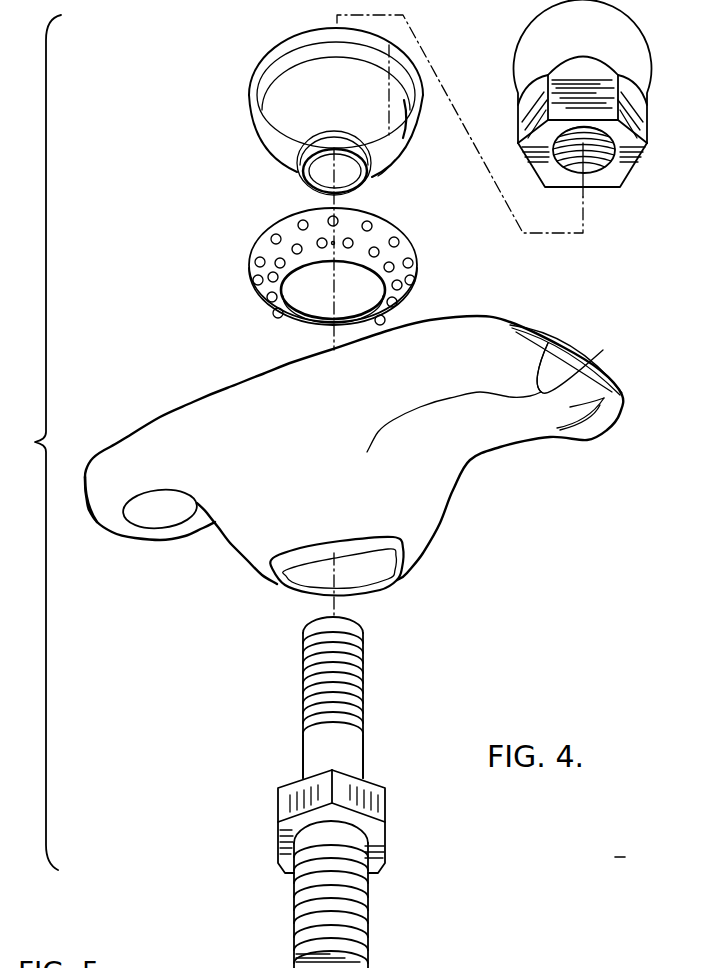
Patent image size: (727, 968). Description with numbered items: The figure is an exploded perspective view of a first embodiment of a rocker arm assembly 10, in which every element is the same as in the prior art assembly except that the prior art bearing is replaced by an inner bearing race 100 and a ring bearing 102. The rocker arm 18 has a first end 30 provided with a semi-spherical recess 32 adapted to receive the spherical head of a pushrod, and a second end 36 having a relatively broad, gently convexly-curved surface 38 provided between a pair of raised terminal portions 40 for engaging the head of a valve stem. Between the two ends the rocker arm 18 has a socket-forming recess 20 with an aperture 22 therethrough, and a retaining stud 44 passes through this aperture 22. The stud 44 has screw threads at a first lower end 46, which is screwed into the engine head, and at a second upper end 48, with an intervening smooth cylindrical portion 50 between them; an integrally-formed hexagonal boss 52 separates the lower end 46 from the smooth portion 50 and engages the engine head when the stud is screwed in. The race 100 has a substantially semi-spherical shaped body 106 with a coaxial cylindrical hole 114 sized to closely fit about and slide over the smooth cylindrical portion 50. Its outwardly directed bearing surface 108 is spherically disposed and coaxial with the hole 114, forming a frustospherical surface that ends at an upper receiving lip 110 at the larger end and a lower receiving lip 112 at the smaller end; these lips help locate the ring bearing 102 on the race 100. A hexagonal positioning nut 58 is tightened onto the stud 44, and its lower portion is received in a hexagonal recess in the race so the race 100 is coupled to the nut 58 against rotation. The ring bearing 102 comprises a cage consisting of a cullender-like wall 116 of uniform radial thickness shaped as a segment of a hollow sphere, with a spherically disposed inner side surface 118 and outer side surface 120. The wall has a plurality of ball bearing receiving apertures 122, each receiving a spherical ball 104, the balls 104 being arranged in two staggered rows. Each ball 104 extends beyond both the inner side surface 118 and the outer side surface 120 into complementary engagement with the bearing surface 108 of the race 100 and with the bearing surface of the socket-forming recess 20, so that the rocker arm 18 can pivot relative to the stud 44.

The rocker arm assembly 10 is at (34, 442).
The rocker arm 18 is at (520, 472).
The socket-forming recess 20 is at (397, 503).
The aperture 22 is at (363, 563).
The first end 30 is at (110, 502).
The semi-spherical recess 32 is at (153, 505).
The second end 36 is at (553, 380).
The convexly-curved surface 38 is at (600, 400).
The raised terminal portions 40 is at (548, 343).
The retaining stud 44 is at (276, 755).
The first lower end 46 is at (300, 890).
The second upper end 48 is at (315, 650).
The smooth cylindrical portion 50 is at (357, 747).
The hexagonal boss 52 is at (380, 808).
The positioning nut 58 is at (630, 90).
The inner bearing race 100 is at (283, 110).
The ring bearing 102 is at (260, 242).
The ball bearing 104 is at (250, 270).
The semi-spherical shaped body 106 is at (388, 140).
The bearing surface 108 is at (378, 173).
The upper receiving lip 110 is at (262, 60).
The lower receiving lip 112 is at (298, 163).
The coaxial cylindrical hole 114 is at (318, 172).
The cullender-like wall 116 is at (257, 280).
The inner side surface 118 is at (403, 292).
The outer side surface 120 is at (410, 247).
The ball bearing receiving apertures 122 is at (253, 288).